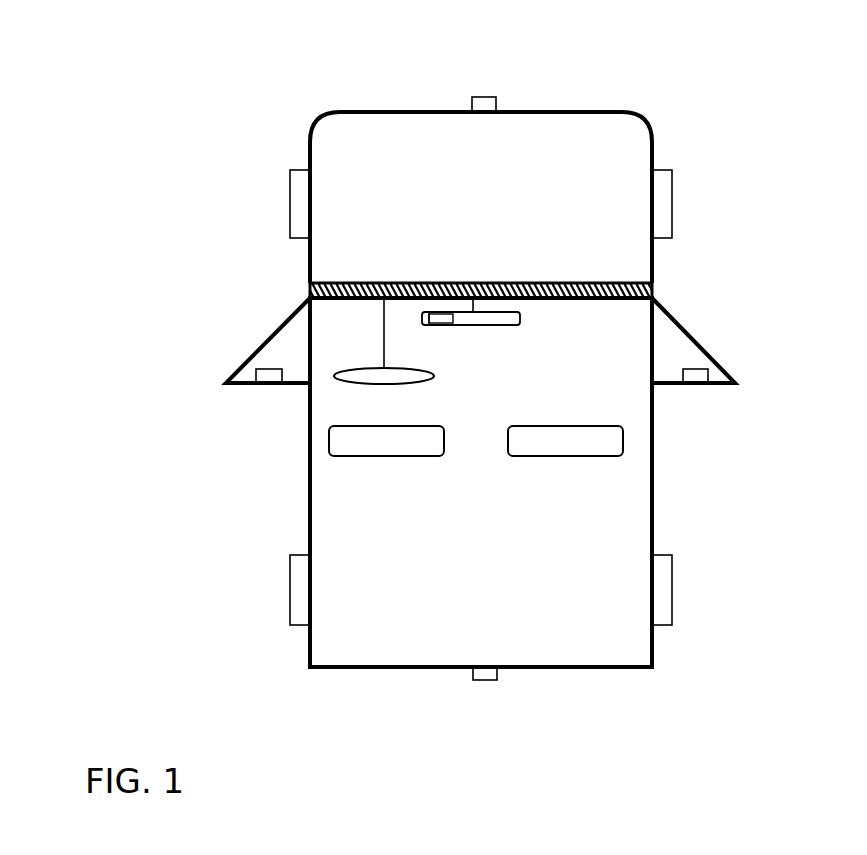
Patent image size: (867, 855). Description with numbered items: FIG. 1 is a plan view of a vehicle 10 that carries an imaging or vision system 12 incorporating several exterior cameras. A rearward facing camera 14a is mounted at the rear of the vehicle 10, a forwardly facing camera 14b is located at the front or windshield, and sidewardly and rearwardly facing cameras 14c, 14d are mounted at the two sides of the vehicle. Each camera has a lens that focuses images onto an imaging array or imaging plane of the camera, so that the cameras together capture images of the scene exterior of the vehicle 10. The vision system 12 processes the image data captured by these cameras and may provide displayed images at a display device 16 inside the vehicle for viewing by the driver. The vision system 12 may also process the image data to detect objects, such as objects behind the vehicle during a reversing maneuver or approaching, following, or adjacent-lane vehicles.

The vehicle 10 is at (237, 127).
The vision system 12 is at (435, 696).
The rearward facing camera 14a is at (485, 676).
The forwardly facing camera 14b is at (482, 98).
The sidewardly/rearwardly facing camera 14c is at (262, 374).
The sidewardly/rearwardly facing camera 14d is at (695, 375).
The display device 16 is at (445, 320).